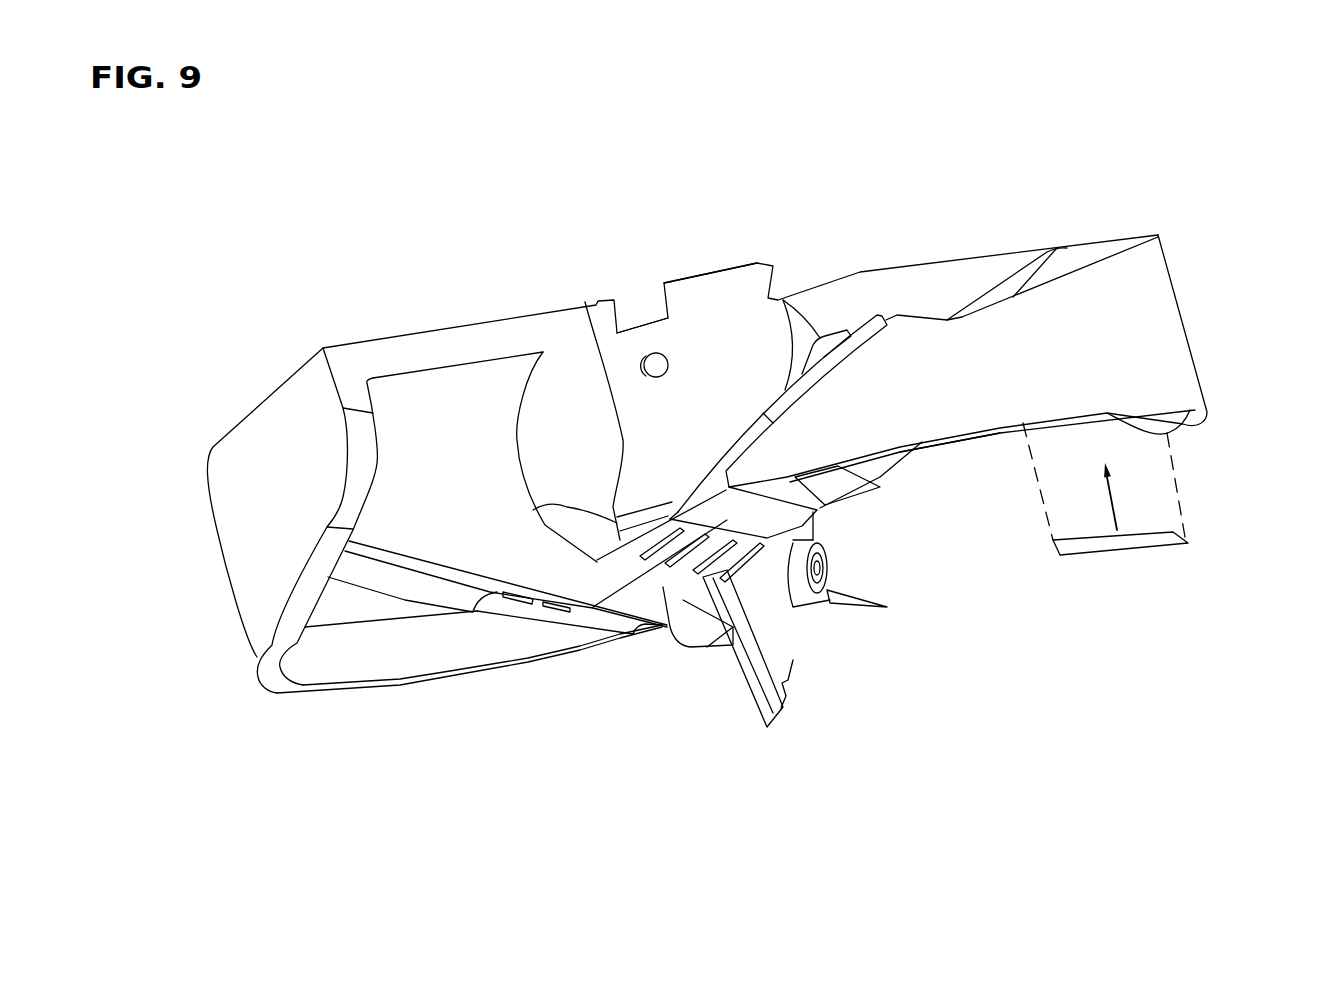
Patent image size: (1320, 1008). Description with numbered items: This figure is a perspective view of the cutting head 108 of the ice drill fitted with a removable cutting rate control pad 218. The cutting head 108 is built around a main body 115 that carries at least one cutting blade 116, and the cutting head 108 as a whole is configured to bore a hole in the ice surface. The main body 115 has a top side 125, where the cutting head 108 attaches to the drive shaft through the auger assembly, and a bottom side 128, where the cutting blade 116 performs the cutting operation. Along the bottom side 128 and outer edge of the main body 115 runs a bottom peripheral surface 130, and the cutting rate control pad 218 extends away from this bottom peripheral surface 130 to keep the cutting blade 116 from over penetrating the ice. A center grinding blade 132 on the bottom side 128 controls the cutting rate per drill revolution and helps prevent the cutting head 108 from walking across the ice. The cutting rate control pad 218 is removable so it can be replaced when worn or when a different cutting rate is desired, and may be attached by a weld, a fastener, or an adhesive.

The cutting head 108 is at (1012, 177).
The main body 115 is at (275, 454).
The cutting blade 116 is at (723, 510).
The top side 125 is at (661, 212).
The bottom side 128 is at (804, 786).
The bottom peripheral surface 130 is at (967, 433).
The center grinding blade 132 is at (771, 707).
The cutting rate control pad 218 is at (1173, 532).